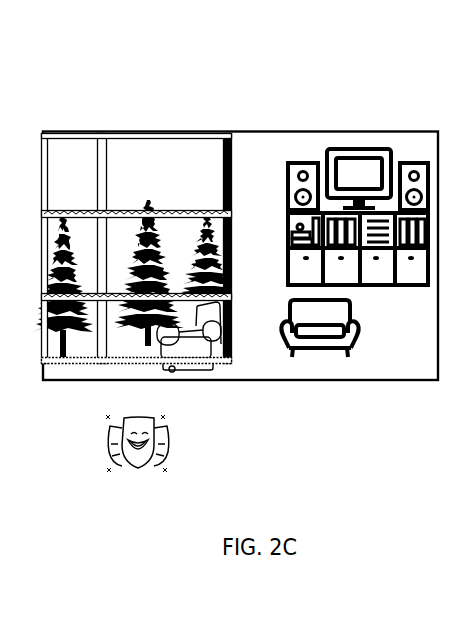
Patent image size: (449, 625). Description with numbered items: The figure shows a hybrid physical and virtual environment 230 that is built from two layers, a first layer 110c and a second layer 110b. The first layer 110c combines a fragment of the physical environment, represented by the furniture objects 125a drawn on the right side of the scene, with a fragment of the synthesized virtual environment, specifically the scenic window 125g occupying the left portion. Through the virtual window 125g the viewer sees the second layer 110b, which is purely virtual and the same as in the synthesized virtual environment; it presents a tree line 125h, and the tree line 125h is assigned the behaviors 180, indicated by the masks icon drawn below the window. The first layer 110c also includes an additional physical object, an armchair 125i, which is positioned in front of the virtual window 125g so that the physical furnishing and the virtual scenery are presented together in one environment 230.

The hybrid physical and virtual environment 230 is at (74, 131).
The scenic window 125g is at (138, 269).
The second layer 110b is at (152, 176).
The first layer 110c is at (278, 216).
The furniture objects 125a is at (348, 147).
The tree line 125h is at (143, 333).
The armchair 125i is at (182, 367).
The behaviors 180 is at (106, 467).